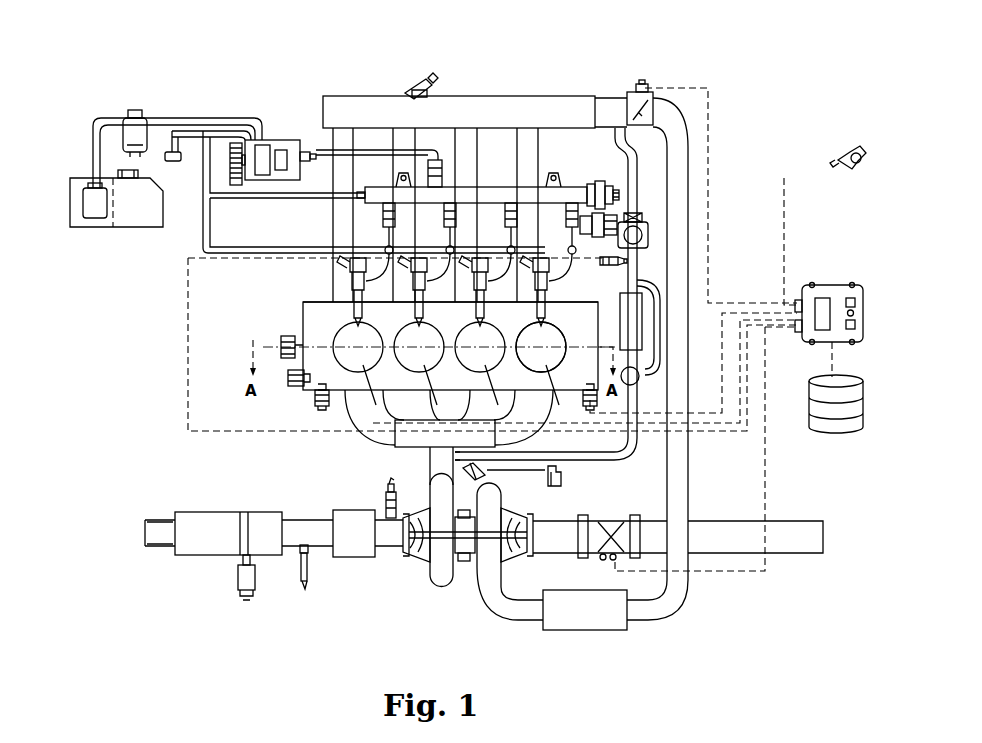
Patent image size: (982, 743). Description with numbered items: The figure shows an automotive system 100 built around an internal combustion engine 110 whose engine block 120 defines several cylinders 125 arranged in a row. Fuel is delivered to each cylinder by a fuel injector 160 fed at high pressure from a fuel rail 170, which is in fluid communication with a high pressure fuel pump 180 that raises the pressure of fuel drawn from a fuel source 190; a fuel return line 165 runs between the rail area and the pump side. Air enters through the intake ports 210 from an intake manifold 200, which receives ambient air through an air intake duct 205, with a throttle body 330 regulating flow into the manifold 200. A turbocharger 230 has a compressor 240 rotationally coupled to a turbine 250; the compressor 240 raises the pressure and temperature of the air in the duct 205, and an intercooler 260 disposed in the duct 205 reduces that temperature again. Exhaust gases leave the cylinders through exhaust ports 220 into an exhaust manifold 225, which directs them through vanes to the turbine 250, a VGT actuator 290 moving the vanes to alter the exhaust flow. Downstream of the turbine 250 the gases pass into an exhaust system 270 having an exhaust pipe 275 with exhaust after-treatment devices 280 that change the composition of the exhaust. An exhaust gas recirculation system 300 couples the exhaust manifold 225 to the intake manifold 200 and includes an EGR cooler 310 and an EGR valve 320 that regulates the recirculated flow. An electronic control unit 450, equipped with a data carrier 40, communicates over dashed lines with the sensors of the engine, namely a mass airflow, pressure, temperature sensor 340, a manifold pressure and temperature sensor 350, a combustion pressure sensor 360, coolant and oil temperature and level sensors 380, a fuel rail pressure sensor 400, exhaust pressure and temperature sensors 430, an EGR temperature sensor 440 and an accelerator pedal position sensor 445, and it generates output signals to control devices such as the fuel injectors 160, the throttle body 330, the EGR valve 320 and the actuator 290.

The automotive system 100 is at (238, 76).
The internal combustion engine 110 is at (553, 88).
The engine block 120 is at (303, 310).
The cylinder 125 is at (560, 328).
The fuel injector 160 is at (365, 287).
The fuel return line 165 is at (358, 232).
The fuel rail 170 is at (365, 195).
The high pressure fuel pump 180 is at (280, 140).
The fuel source 190 is at (140, 236).
The intake manifold 200 is at (470, 112).
The air intake duct 205 is at (680, 495).
The intake port 210 is at (347, 303).
The exhaust port 220 is at (347, 392).
The exhaust manifold 225 is at (420, 440).
The turbocharger 230 is at (438, 590).
The compressor 240 is at (492, 560).
The turbine 250 is at (432, 572).
The intercooler 260 is at (608, 617).
The exhaust system 270 is at (215, 505).
The exhaust pipe 275 is at (160, 528).
The exhaust after-treatment device 280 is at (208, 538).
The VGT actuator 290 is at (485, 477).
The exhaust gas recirculation system 300 is at (605, 460).
The EGR cooler 310 is at (632, 335).
The EGR valve 320 is at (634, 216).
The throttle body 330 is at (645, 90).
The mass airflow, pressure, temperature sensor 340 is at (597, 556).
The manifold pressure and temperature sensor 350 is at (410, 86).
The combustion pressure sensor 360 is at (378, 392).
The coolant and oil temperature and level sensors 380 is at (313, 397).
The fuel rail pressure sensor 400 is at (617, 193).
The exhaust pressure and temperature sensors 430 is at (302, 592).
The EGR temperature sensor 440 is at (627, 259).
The accelerator pedal position sensor 445 is at (852, 150).
The electronic control unit 450 is at (833, 283).
The data carrier 40 is at (836, 433).